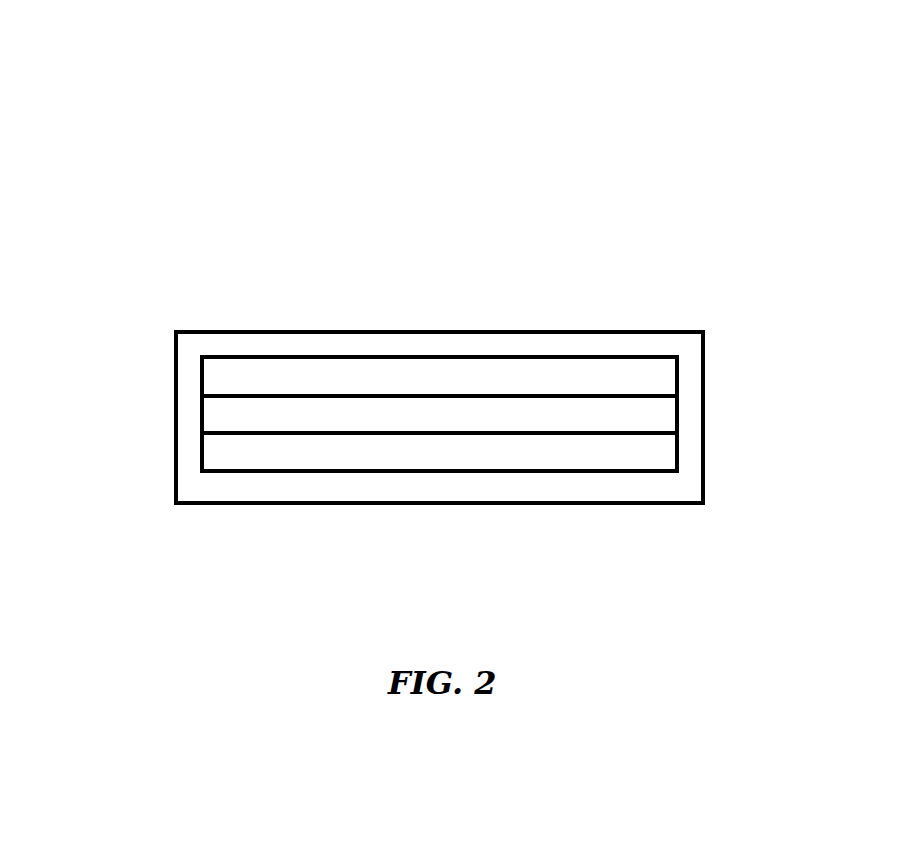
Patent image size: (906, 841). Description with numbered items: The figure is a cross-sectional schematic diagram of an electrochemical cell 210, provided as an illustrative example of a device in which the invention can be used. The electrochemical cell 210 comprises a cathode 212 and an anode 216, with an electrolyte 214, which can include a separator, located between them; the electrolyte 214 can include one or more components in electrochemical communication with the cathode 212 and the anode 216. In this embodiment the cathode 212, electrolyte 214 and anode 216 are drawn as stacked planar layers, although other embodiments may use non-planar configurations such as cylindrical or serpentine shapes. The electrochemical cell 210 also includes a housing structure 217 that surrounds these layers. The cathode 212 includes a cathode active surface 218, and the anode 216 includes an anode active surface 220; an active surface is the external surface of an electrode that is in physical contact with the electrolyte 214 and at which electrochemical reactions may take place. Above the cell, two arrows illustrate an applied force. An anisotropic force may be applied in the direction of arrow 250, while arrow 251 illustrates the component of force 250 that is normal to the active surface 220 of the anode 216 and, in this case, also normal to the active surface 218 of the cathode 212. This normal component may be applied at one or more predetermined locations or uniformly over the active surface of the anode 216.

The electrochemical cell 210 is at (56, 262).
The cathode 212 is at (652, 370).
The electrolyte 214 is at (652, 416).
The anode 216 is at (652, 445).
The housing structure 217 is at (565, 343).
The cathode active surface 218 is at (292, 392).
The anode active surface 220 is at (301, 433).
The arrow indicating direction of anisotropic force 250 is at (424, 36).
The arrow indicating normal force component 251 is at (424, 36).